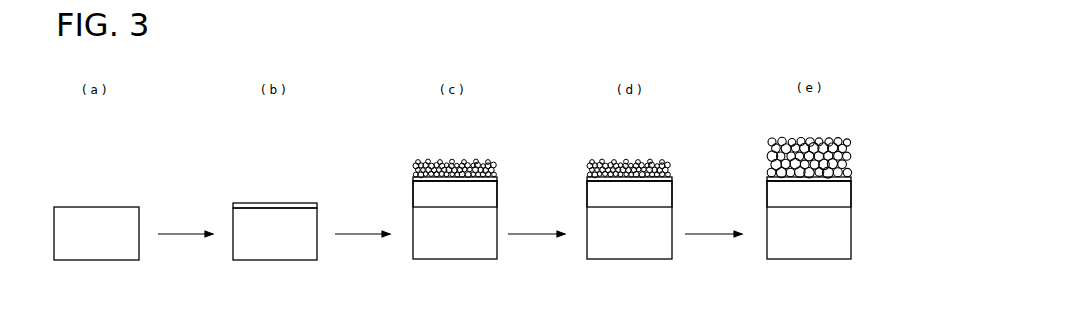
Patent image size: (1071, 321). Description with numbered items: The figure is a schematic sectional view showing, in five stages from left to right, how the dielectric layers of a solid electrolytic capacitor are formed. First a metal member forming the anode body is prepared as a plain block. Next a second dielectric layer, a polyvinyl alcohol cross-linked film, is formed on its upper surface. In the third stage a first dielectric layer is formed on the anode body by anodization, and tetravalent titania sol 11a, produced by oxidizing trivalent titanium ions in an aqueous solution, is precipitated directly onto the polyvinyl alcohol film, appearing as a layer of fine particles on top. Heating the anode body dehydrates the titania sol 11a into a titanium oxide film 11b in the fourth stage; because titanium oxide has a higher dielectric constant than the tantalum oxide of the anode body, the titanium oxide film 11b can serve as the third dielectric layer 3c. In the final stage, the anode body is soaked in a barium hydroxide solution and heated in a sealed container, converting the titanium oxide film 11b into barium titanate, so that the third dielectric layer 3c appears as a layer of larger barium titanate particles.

The third dielectric layer 3c is at (812, 138).
The tetravalent titania sol 11a is at (454, 160).
The titanium oxide film 11b is at (632, 160).